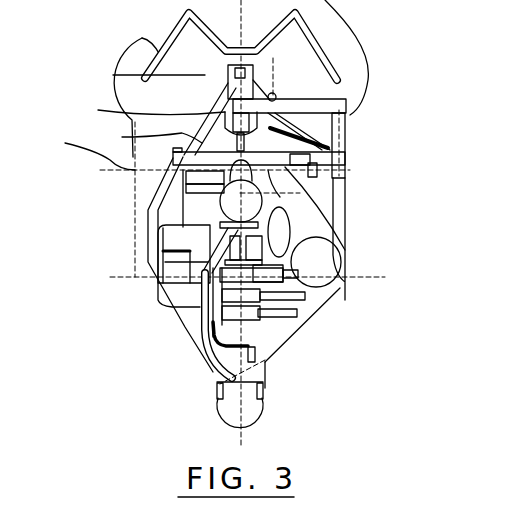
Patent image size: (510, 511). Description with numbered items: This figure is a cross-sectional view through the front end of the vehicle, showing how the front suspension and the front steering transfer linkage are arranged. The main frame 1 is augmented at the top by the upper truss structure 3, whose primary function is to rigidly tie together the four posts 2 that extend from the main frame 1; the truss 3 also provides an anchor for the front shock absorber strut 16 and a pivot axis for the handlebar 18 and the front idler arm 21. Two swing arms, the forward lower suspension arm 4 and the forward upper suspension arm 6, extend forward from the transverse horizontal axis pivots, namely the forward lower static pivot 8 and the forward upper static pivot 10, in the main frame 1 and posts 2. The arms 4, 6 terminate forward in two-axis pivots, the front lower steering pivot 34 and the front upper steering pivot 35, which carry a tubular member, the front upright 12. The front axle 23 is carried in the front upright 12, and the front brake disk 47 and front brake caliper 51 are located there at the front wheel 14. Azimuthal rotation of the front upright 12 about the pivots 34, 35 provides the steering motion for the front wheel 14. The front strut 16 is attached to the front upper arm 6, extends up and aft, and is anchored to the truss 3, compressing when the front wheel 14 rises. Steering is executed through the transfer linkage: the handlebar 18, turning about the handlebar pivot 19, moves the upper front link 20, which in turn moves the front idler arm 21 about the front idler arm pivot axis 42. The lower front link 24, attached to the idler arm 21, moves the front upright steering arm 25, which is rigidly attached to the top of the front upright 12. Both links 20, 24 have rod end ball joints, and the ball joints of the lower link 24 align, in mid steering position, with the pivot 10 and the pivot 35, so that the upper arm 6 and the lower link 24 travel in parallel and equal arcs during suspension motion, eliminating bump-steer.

The main frame structure 1 is at (307, 320).
The posts 2 is at (160, 209).
The upper truss structure 3 is at (133, 137).
The forward lower suspension arm 4 is at (338, 288).
The forward upper suspension arm 6 is at (186, 174).
The forward lower static pivot 8 is at (130, 277).
The forward upper static pivot 10 is at (200, 85).
The front upright member 12 is at (265, 165).
The front wheel 14 is at (215, 372).
The front shock absorber strut 16 is at (225, 112).
The handlebar 18 is at (150, 37).
The handlebar pivot 19 is at (113, 75).
The upper front link 20 is at (302, 107).
The front idler arm 21 is at (350, 122).
The front axle 23 is at (197, 305).
The lower front link 24 is at (345, 172).
The front upright steering arm 25 is at (350, 160).
The front lower steering pivot 34 is at (200, 273).
The front upper steering pivot 35 is at (340, 217).
The front idler arm pivot axis 42 is at (278, 72).
The front brake disk 47 is at (270, 355).
The front brake caliper 51 is at (288, 197).